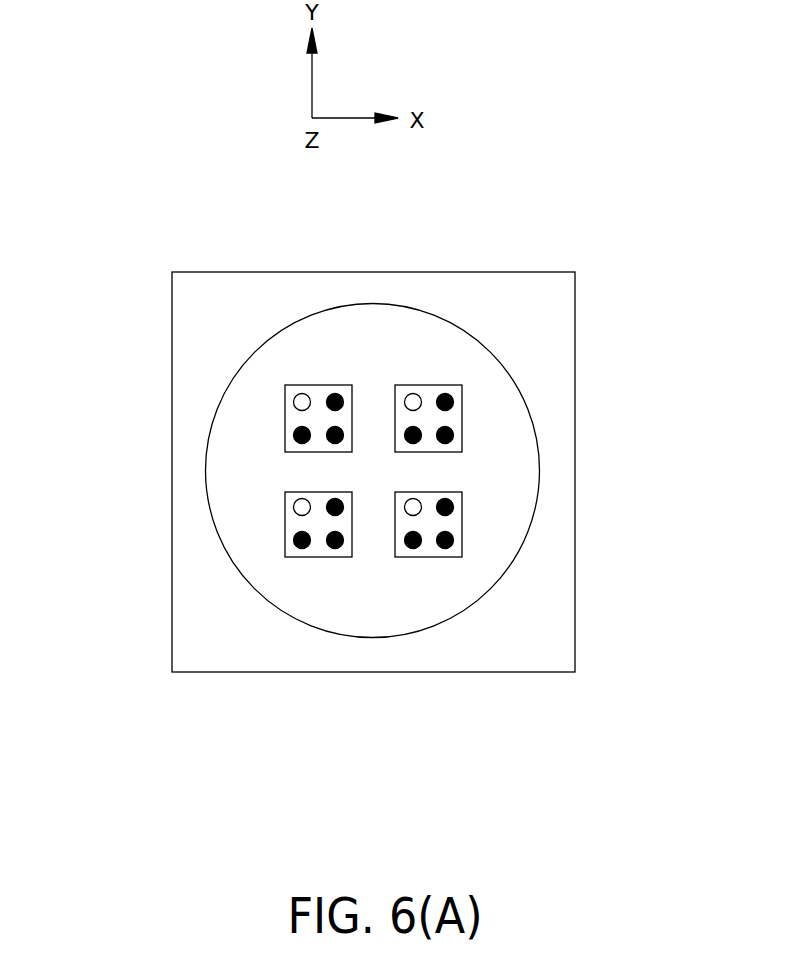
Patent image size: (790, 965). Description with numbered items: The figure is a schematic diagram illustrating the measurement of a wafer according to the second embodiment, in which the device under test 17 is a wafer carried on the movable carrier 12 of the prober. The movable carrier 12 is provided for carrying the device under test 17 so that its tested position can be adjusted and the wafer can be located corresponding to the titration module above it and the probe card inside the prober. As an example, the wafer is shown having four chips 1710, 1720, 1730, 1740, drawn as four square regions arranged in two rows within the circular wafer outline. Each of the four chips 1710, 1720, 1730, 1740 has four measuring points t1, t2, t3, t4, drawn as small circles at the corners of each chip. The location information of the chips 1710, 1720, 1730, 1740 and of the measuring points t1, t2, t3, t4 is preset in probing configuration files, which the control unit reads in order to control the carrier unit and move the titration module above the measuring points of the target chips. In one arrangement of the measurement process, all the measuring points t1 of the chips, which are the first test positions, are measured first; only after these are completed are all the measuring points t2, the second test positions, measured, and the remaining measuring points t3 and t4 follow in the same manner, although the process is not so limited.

The movable carrier 12 is at (459, 343).
The device under test 17 is at (371, 534).
The chip 1710 is at (285, 392).
The chip 1720 is at (332, 549).
The chip 1730 is at (458, 385).
The chip 1740 is at (405, 557).
The measuring point t1 is at (412, 398).
The measuring point t2 is at (294, 436).
The measuring point t3 is at (336, 393).
The measuring point t4 is at (332, 444).